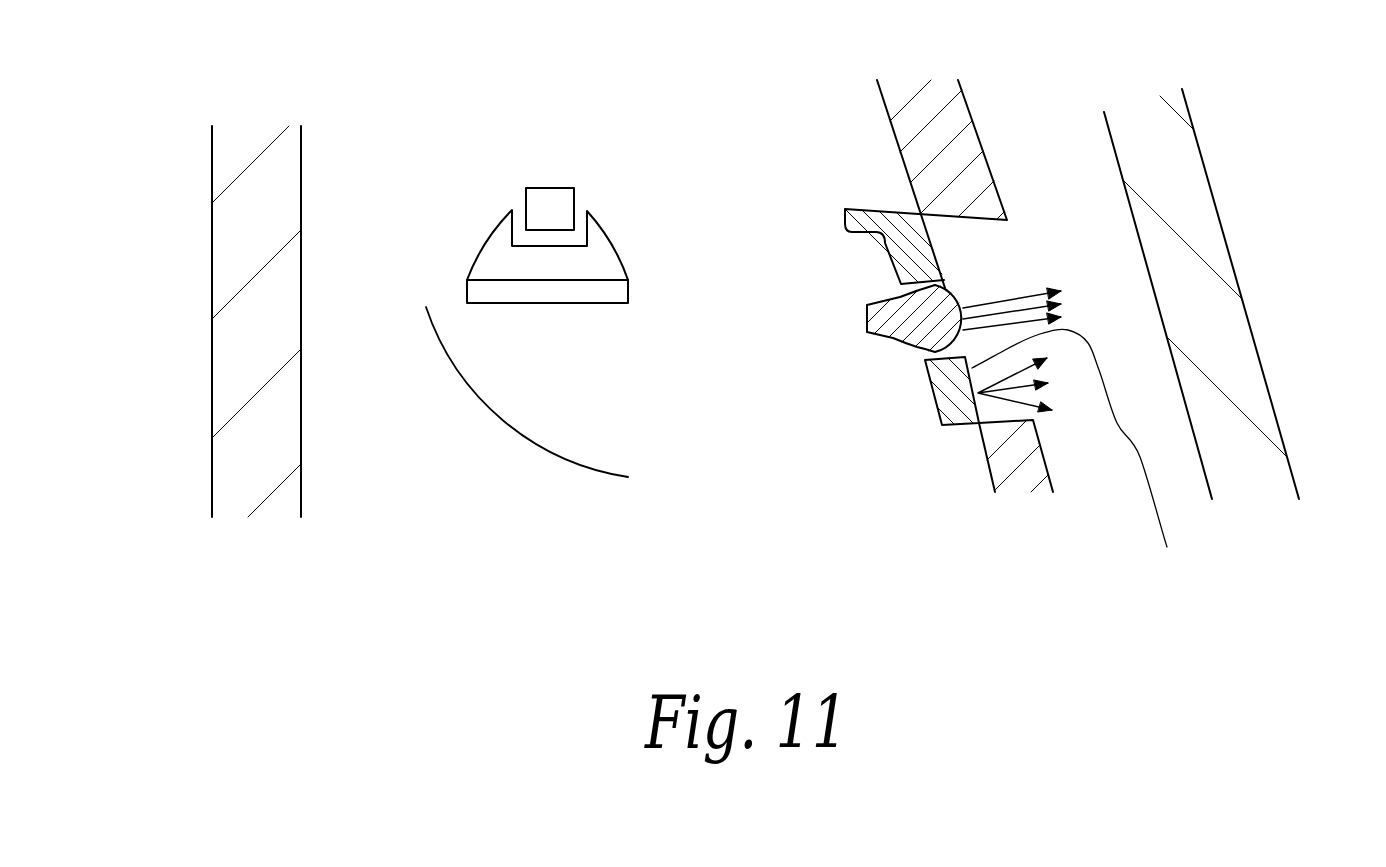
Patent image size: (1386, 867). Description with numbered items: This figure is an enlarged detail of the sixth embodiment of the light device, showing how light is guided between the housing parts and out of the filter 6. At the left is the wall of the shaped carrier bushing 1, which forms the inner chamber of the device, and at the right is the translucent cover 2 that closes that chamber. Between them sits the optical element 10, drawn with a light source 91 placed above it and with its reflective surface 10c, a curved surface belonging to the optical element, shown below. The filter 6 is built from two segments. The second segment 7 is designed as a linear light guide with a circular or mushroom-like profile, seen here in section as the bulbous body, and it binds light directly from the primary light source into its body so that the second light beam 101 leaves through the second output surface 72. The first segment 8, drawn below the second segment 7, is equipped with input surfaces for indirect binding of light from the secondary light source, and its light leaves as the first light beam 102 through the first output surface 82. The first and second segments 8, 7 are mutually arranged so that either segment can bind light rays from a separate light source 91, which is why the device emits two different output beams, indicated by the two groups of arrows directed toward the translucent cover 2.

The carrier bushing 1 is at (210, 403).
The translucent cover 2 is at (1230, 260).
The optical element 10 is at (478, 245).
The light source 91 is at (542, 185).
The reflective surface 10c is at (547, 448).
The filter 6 is at (837, 200).
The second output surface 72 is at (937, 253).
The second segment 7 is at (885, 335).
The first segment 8 is at (950, 432).
The second light beam 101 is at (1063, 275).
The first light beam 102 is at (1062, 427).
The first output surface 82 is at (1077, 465).